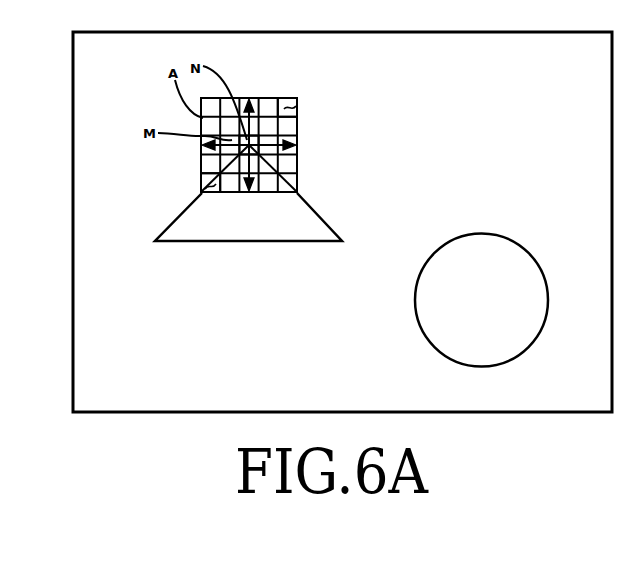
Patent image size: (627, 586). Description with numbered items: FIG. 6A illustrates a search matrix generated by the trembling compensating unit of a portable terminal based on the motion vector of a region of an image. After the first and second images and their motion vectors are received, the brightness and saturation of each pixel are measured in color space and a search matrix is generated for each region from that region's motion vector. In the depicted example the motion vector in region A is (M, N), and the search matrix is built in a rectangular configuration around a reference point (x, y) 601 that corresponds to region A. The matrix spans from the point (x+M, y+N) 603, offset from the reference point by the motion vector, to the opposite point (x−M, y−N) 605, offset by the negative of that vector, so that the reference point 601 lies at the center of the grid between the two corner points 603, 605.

The reference point (x, y) 601 is at (297, 146).
The point (x+M, y+N) 603 is at (300, 104).
The point (x−M, y−N) 605 is at (205, 185).